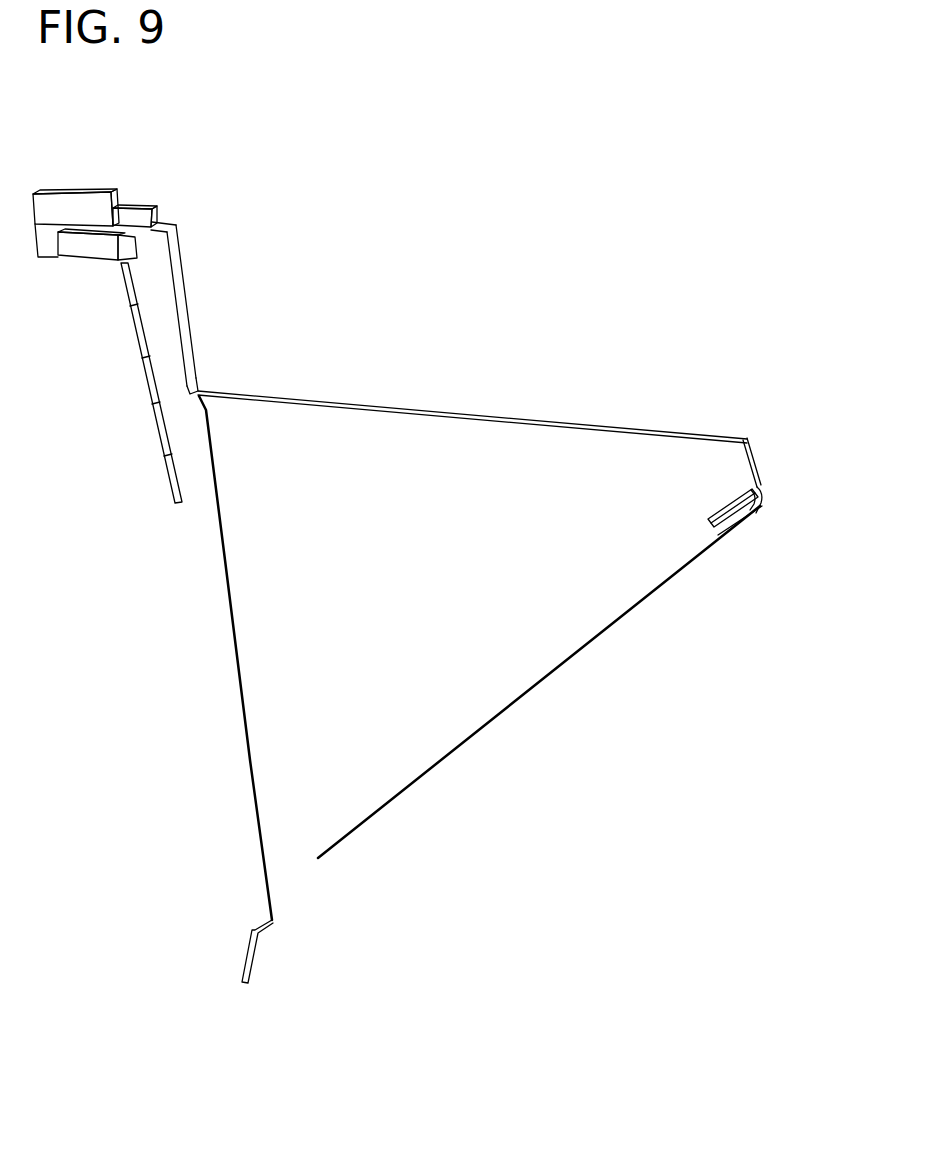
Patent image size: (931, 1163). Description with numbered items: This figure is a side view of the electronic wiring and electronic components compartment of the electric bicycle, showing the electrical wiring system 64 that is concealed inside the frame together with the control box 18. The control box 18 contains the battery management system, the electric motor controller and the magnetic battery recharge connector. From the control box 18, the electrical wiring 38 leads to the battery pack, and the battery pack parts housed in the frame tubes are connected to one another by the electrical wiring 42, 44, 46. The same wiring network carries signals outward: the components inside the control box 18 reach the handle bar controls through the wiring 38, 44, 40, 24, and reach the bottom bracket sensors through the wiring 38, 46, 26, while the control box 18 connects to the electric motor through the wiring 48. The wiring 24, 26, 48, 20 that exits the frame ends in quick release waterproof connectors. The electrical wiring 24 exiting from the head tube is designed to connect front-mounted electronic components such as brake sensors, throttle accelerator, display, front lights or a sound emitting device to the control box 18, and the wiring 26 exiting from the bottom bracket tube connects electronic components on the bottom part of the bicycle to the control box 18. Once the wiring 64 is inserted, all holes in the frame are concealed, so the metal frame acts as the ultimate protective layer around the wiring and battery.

The control box 18 is at (78, 217).
The electrical wiring 20 is at (186, 239).
The electrical wiring 24 is at (716, 500).
The wiring 26 is at (259, 957).
The electrical wiring 38 is at (196, 377).
The wiring 40 is at (753, 456).
The electrical wiring 42 is at (542, 676).
The electrical wiring 44 is at (446, 420).
The electrical wiring 46 is at (234, 569).
The wiring 48 is at (167, 470).
The electrical wiring system 64 is at (479, 619).